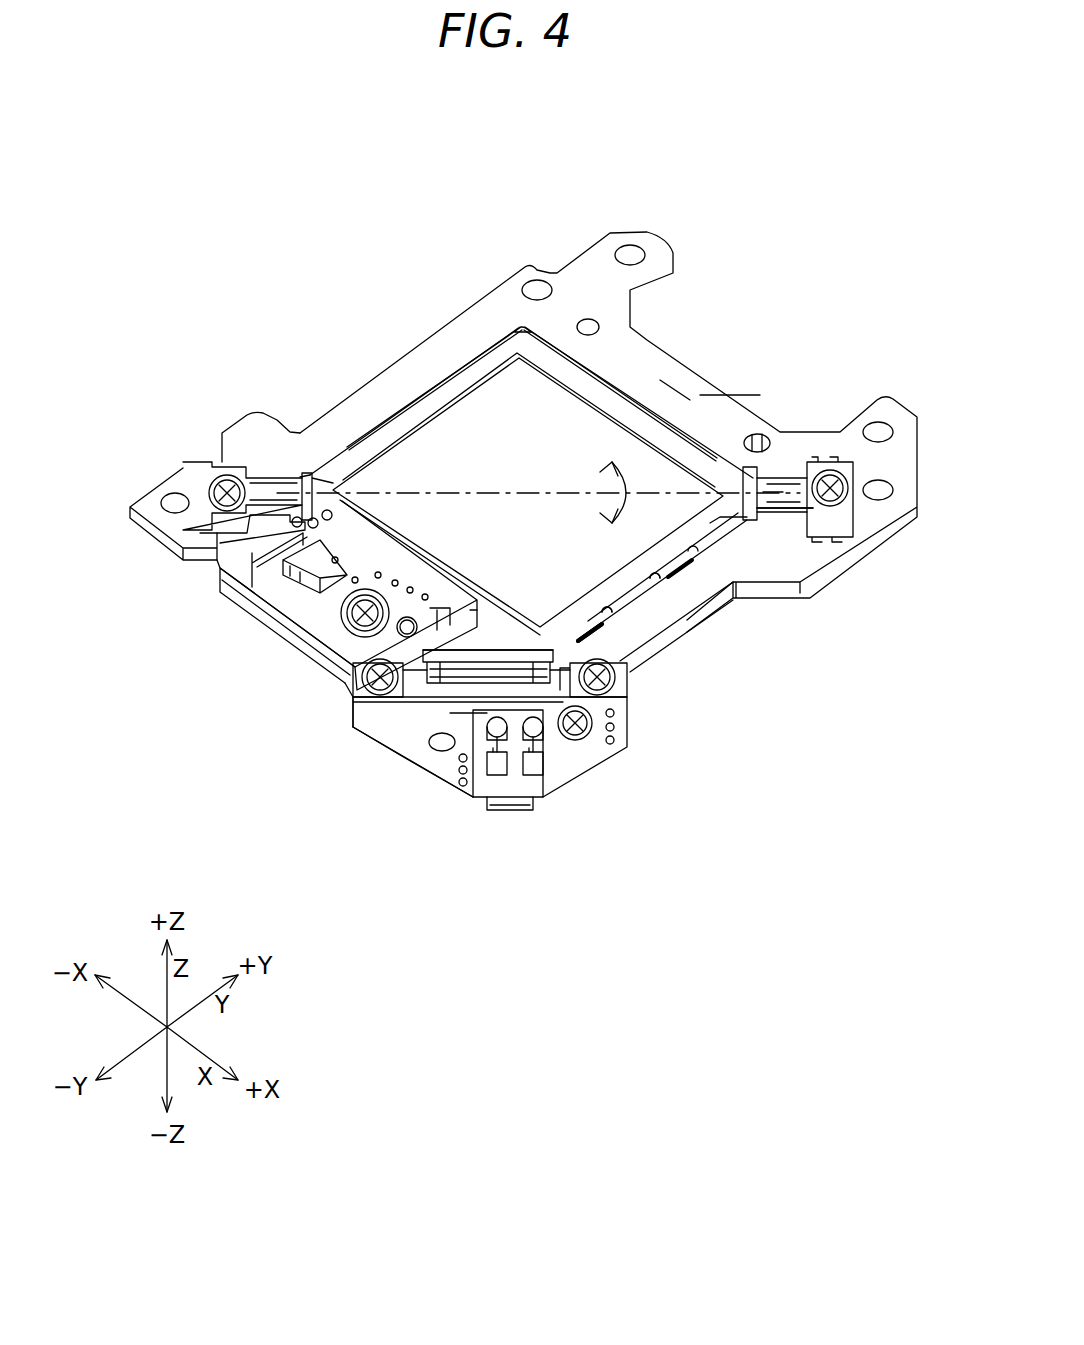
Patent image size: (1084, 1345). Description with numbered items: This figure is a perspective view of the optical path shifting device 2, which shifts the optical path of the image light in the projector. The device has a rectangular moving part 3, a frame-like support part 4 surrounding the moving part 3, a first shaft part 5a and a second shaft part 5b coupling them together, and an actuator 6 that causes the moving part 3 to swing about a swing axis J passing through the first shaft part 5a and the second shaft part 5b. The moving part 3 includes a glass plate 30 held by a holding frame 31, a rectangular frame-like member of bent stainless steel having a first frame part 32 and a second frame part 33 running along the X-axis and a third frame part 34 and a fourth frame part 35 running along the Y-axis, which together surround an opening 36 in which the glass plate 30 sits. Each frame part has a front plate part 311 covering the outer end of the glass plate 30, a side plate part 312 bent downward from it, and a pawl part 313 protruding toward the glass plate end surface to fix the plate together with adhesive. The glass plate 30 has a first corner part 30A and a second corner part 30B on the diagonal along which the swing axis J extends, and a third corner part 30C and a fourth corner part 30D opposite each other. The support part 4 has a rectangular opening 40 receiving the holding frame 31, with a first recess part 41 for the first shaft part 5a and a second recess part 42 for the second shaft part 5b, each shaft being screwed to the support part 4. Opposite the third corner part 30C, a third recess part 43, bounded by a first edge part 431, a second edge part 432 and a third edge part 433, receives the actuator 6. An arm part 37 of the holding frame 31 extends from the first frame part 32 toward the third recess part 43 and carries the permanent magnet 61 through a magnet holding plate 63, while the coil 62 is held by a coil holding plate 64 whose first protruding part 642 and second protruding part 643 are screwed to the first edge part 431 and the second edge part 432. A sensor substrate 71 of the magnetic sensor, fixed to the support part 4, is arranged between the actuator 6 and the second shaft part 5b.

The optical path shifting device 2 is at (326, 196).
The moving part 3 is at (578, 170).
The glass plate 30 is at (510, 410).
The holding frame 31 is at (540, 420).
The first corner part 30A is at (693, 500).
The second corner part 30B is at (363, 485).
The third corner part 30C is at (473, 670).
The fourth corner part 30D is at (540, 355).
The support part 4 is at (632, 333).
The first shaft part 5a is at (790, 497).
The second shaft part 5b is at (277, 497).
The actuator 6 is at (598, 882).
The first frame part 32 is at (343, 570).
The second frame part 33 is at (640, 342).
The third frame part 34 is at (760, 515).
The fourth frame part 35 is at (416, 415).
The opening 36 is at (592, 407).
The arm part 37 is at (478, 615).
The opening 40 is at (698, 362).
The first recess part 41 is at (800, 510).
The second recess part 42 is at (250, 523).
The third recess part 43 is at (565, 713).
The permanent magnet 61 is at (488, 640).
The coil 62 is at (497, 682).
The magnet holding plate 63 is at (538, 655).
The coil holding plate 64 is at (522, 697).
The sensor substrate 71 is at (310, 548).
The front plate part 311 is at (690, 560).
The side plate part 312 is at (660, 575).
The pawl part 313 is at (640, 615).
The first edge part 431 is at (370, 700).
The second edge part 432 is at (623, 718).
The third edge part 433 is at (418, 747).
The first protruding part 642 is at (360, 690).
The second protruding part 643 is at (623, 680).
The swing axis J is at (483, 492).